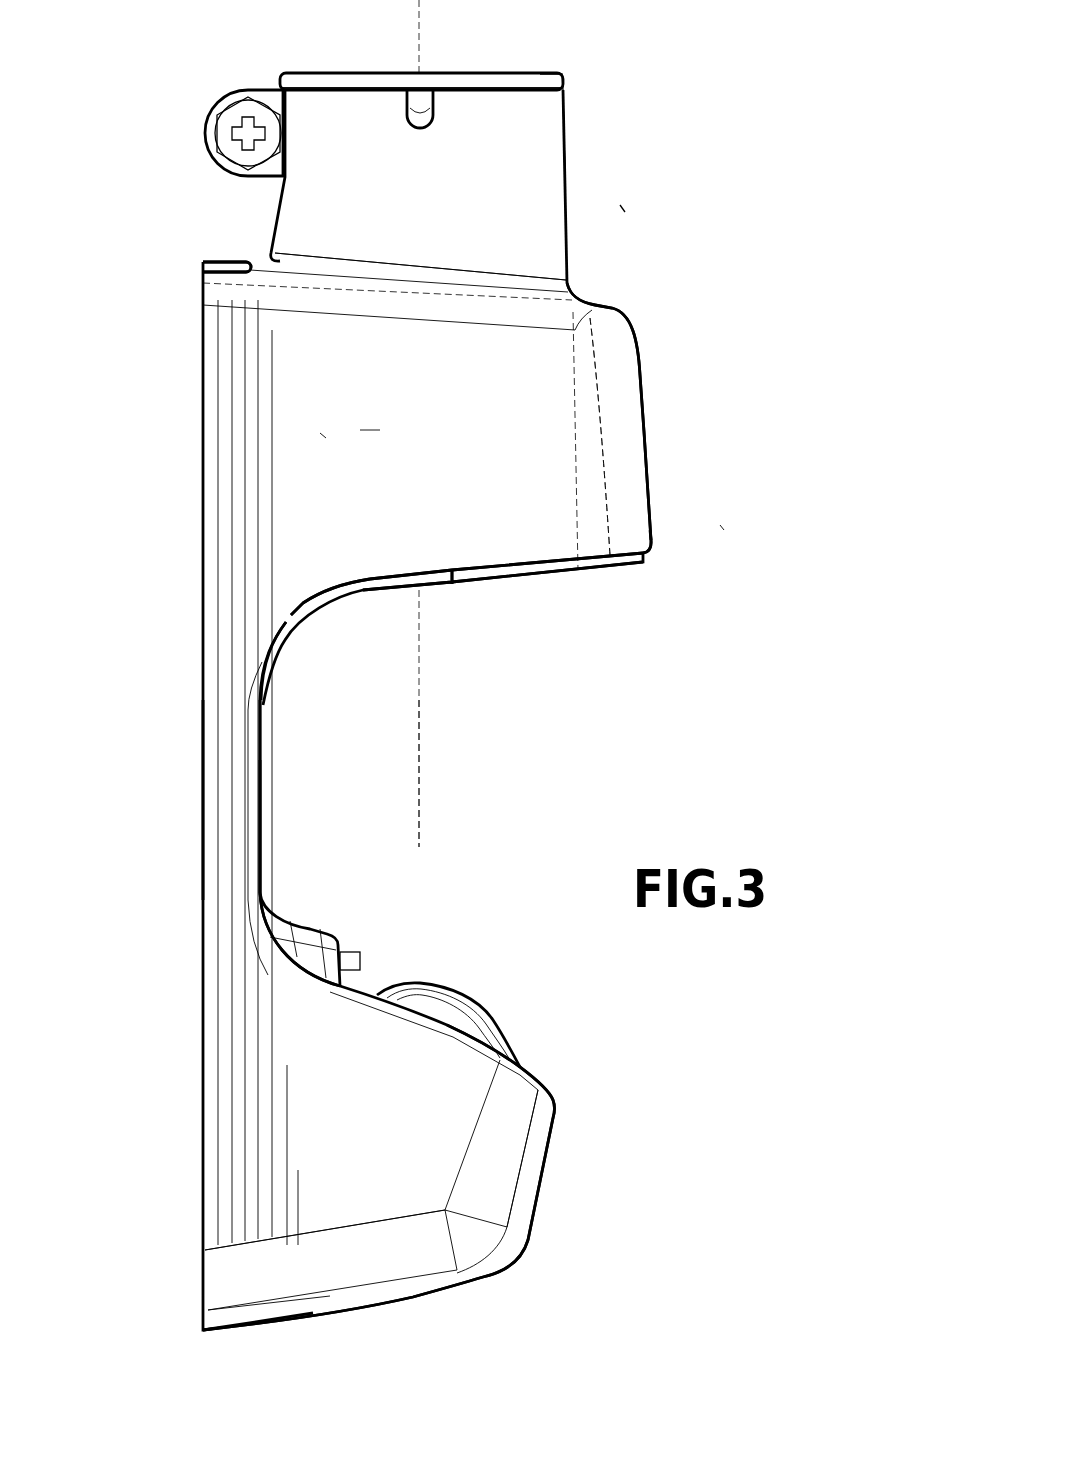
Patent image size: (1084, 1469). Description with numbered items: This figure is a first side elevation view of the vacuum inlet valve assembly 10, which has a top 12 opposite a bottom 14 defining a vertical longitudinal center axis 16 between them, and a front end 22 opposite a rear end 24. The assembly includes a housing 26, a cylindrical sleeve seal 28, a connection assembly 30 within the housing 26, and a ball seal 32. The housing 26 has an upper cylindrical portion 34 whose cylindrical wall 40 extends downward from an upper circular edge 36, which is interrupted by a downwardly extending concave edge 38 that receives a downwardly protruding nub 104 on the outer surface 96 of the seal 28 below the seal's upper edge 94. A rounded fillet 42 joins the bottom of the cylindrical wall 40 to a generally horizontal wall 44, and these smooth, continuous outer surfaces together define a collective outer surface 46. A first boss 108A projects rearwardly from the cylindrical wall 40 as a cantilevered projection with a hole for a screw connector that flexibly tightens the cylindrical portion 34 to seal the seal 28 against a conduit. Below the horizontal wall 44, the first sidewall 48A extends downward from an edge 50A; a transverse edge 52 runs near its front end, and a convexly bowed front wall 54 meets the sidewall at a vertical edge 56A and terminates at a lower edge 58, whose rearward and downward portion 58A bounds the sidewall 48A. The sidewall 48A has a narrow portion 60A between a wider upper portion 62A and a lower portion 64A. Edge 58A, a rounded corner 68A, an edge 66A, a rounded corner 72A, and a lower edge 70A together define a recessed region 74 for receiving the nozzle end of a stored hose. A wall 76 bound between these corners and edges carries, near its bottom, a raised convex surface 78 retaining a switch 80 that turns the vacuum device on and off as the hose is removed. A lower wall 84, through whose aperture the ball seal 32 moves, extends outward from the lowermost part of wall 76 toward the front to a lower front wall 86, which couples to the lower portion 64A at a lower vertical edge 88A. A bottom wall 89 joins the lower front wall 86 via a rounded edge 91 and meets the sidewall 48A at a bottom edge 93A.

The vacuum inlet valve assembly 10 is at (625, 208).
The top 12 is at (390, 58).
The bottom 14 is at (324, 1332).
The longitudinal center axis 16 is at (421, 14).
The front end 22 is at (722, 528).
The rear end 24 is at (156, 526).
The housing 26 is at (647, 368).
The cylindrical seal 28 is at (492, 65).
The connection assembly 30 is at (552, 577).
The ball seal 32 is at (476, 990).
The upper cylindrical portion 34 is at (575, 130).
The upper circular edge 36 is at (347, 80).
The downwardly extending concave edge 38 is at (432, 104).
The cylindrical wall 40 is at (575, 130).
The rounded fillet 42 is at (573, 290).
The horizontal wall 44 is at (258, 268).
The collective outer surface 46 is at (364, 467).
The first sidewall 48A is at (328, 1142).
The edge 50A is at (352, 298).
The transverse edge 52 is at (620, 306).
The front wall 54 is at (645, 420).
The vertical edge 56A is at (598, 487).
The lower edge 58 is at (651, 555).
The lower edge portion 58A is at (453, 590).
The narrow portion 60A is at (218, 804).
The upper portion 62A is at (323, 436).
The lower portion 64A is at (328, 1142).
The edge 66A is at (258, 808).
The rounded corner 68A is at (272, 665).
The lower edge 70A is at (455, 1037).
The rounded corner 72A is at (270, 958).
The recessed region 74 is at (466, 769).
The wall 76 is at (264, 760).
The raised convex surface 78 is at (318, 922).
The switch 80 is at (355, 950).
The lower wall 84 is at (527, 1068).
The lower front wall 86 is at (546, 1195).
The lower vertical edge 88A is at (500, 1152).
The bottom wall 89 is at (414, 1299).
The rounded edge 91 is at (513, 1262).
The bottom edge 93A is at (262, 1278).
The upper edge 94 is at (492, 65).
The outer surface 96 is at (566, 80).
The nub 104 is at (412, 104).
The first boss 108A is at (210, 116).